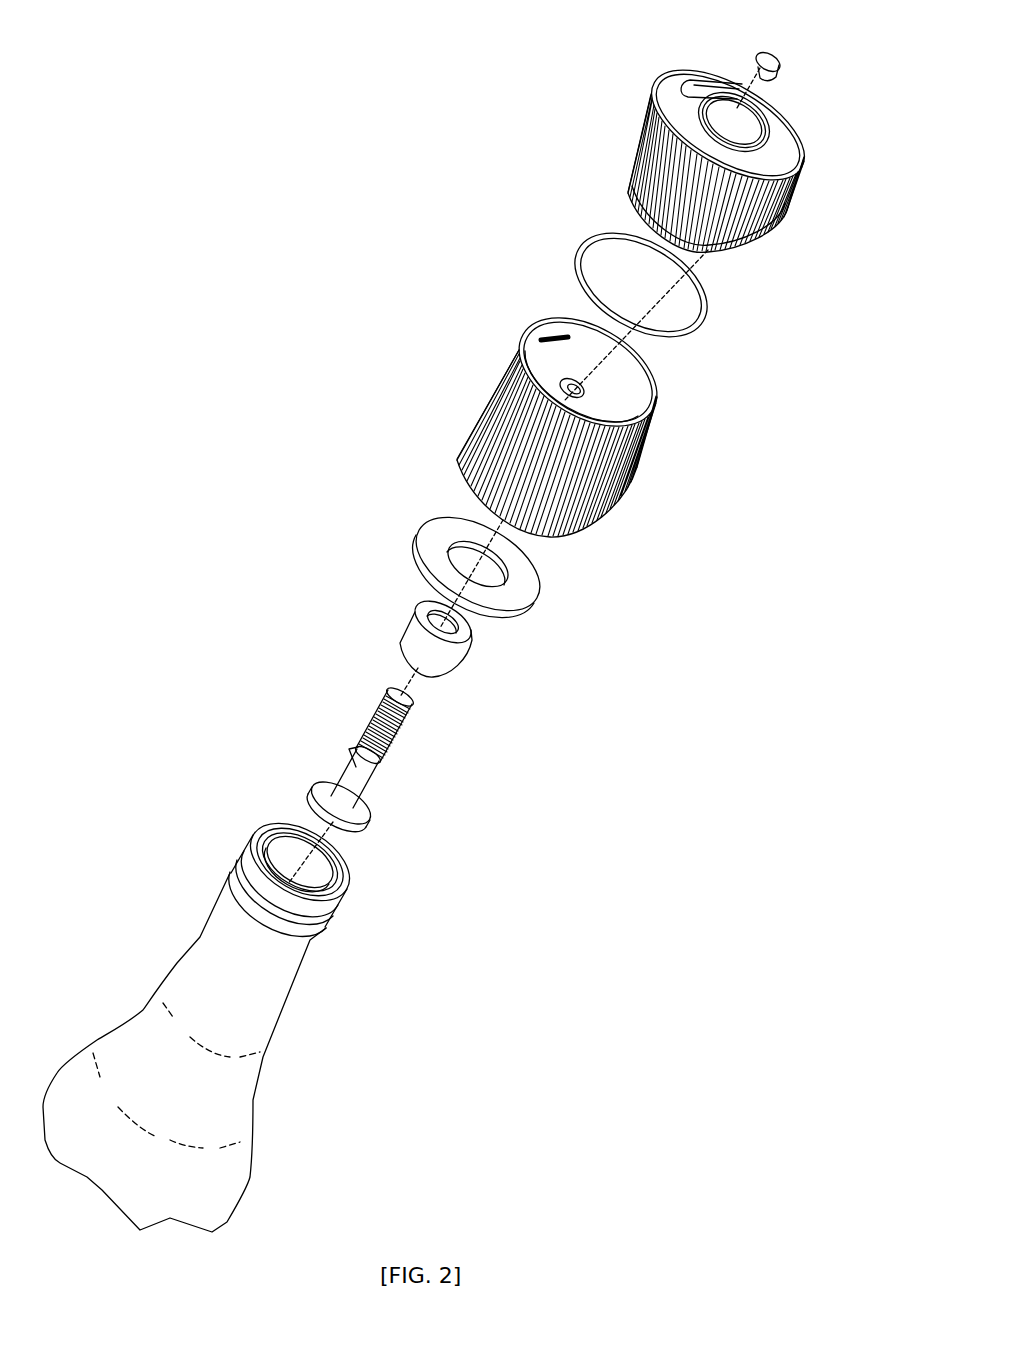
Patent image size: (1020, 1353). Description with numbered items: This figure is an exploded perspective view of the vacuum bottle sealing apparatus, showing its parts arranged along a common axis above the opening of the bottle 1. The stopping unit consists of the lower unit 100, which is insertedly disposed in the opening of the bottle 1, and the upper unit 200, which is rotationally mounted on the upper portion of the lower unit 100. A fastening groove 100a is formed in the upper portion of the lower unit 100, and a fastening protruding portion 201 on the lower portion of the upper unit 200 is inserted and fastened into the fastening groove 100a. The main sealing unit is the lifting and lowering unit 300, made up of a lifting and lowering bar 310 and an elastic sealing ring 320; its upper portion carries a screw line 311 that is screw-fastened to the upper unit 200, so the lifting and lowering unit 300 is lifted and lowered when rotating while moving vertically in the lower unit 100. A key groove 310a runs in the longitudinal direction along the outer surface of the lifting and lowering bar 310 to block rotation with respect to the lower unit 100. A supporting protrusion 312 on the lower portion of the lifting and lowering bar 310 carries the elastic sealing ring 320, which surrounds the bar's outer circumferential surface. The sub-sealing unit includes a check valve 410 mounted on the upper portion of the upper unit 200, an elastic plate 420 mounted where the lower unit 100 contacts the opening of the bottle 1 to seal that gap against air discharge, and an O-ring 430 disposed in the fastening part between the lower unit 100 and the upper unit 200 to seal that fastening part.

The bottle 1 is at (180, 957).
The lower unit 100 is at (576, 416).
The fastening groove 100a is at (656, 382).
The upper unit 200 is at (681, 179).
The fastening protruding portion 201 is at (734, 250).
The lifting and lowering unit 300 is at (303, 582).
The lifting and lowering bar 310 is at (361, 770).
The key groove 310a is at (350, 745).
The screw line 311 is at (410, 730).
The supporting protrusion 312 is at (366, 832).
The elastic sealing ring 320 is at (410, 624).
The check valve 410 is at (752, 59).
The elastic plate 420 is at (416, 530).
The O-ring 430 is at (578, 257).